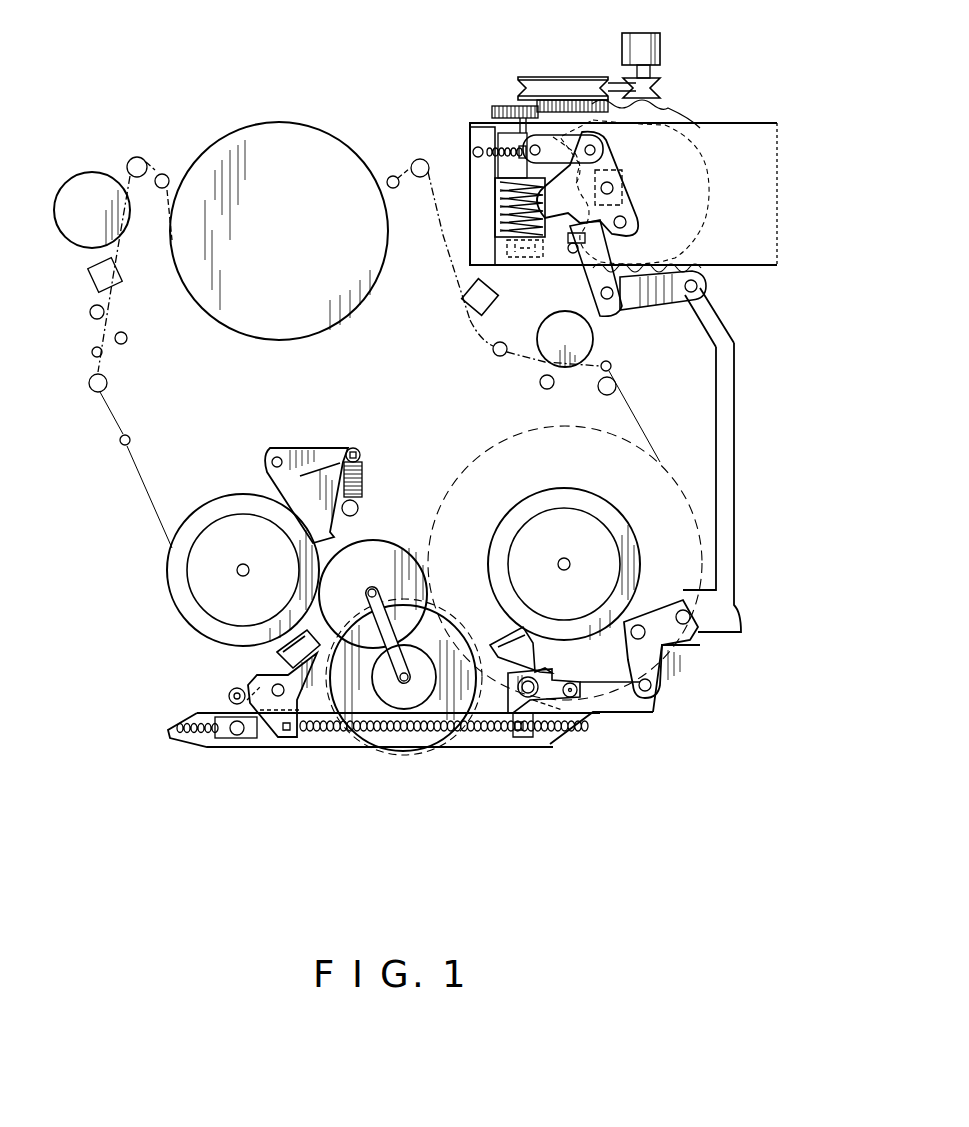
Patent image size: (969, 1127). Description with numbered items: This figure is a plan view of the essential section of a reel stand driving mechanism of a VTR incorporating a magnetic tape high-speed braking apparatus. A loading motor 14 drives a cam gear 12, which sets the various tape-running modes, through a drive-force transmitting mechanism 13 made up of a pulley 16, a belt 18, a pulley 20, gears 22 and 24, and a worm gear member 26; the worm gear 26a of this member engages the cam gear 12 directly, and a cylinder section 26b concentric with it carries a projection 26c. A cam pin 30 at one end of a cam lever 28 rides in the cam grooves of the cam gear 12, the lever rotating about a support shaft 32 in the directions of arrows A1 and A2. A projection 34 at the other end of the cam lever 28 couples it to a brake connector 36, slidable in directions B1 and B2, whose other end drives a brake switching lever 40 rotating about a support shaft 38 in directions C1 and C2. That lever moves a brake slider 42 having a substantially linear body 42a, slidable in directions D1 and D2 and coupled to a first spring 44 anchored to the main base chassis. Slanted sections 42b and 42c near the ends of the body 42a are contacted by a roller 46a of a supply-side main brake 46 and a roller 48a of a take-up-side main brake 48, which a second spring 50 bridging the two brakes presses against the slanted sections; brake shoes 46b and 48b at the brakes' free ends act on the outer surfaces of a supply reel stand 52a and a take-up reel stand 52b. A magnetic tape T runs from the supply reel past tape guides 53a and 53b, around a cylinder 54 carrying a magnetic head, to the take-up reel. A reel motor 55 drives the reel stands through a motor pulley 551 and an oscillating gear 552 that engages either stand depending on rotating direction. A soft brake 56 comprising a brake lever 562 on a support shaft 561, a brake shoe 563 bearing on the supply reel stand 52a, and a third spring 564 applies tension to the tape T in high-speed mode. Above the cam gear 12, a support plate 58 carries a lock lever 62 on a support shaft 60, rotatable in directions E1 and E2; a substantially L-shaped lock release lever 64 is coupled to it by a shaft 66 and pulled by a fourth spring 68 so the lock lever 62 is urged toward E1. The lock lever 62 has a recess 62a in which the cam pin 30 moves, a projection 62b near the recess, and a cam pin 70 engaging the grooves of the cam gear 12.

The cam gear 12 is at (682, 130).
The drive-force transmitting mechanism 13 is at (466, 46).
The loading motor 14 is at (661, 48).
The pulley 16 is at (661, 88).
The belt 18 is at (616, 84).
The pulley 20 is at (540, 78).
The gear 22 is at (656, 104).
The gear 24 is at (498, 106).
The worm gear member 26 is at (497, 205).
The worm gear 26a is at (497, 215).
The cylinder section 26b is at (503, 140).
The projection 26c is at (474, 152).
The cam lever 28 is at (608, 300).
The cam pin 30 is at (592, 268).
The support shaft 32 is at (618, 305).
The projection 34 is at (712, 300).
The brake connector 36 is at (716, 406).
The support shaft 38 is at (641, 625).
The brake switching lever 40 is at (690, 645).
The brake slider 42 is at (560, 750).
The body 42a is at (401, 748).
The slanted section 42b is at (262, 740).
The slanted section 42c is at (590, 716).
The first spring 44 is at (200, 747).
The main brake 46 is at (297, 742).
The roller 46a is at (229, 696).
The brake shoe 46b is at (276, 654).
The main brake 48 is at (500, 726).
The roller 48a is at (586, 727).
The brake shoe 48b is at (533, 650).
The second spring 50 is at (386, 742).
The supply reel stand 52a is at (212, 497).
The take-up reel stand 52b is at (553, 490).
The tape guide 53a is at (138, 157).
The tape guide 53b is at (421, 178).
The cylinder 54 is at (288, 126).
The reel motor 55 is at (340, 745).
The motor pulley 551 is at (376, 742).
The oscillating gear 552 is at (422, 560).
The soft brake 56 is at (303, 447).
The support shaft 561 is at (275, 457).
The brake lever 562 is at (353, 448).
The brake shoe 563 is at (358, 510).
The third spring 564 is at (363, 487).
The support plate 58 is at (748, 126).
The support shaft 60 is at (700, 212).
The lock lever 62 is at (630, 222).
The recess 62a is at (648, 294).
The projection 62b is at (570, 254).
The lock release lever 64 is at (555, 100).
The shaft 66 is at (600, 150).
The fourth spring 68 is at (490, 142).
The cam pin 70 is at (624, 188).
The magnetic tape T is at (165, 174).
The arrow direction A1 is at (644, 264).
The arrow direction A2 is at (698, 284).
The arrow direction B1 is at (757, 472).
The arrow direction B2 is at (757, 498).
The arrow direction C1 is at (672, 673).
The arrow direction C2 is at (665, 695).
The arrow direction D1 is at (476, 760).
The arrow direction D2 is at (462, 760).
The arrow direction E1 is at (580, 207).
The arrow direction E2 is at (595, 192).